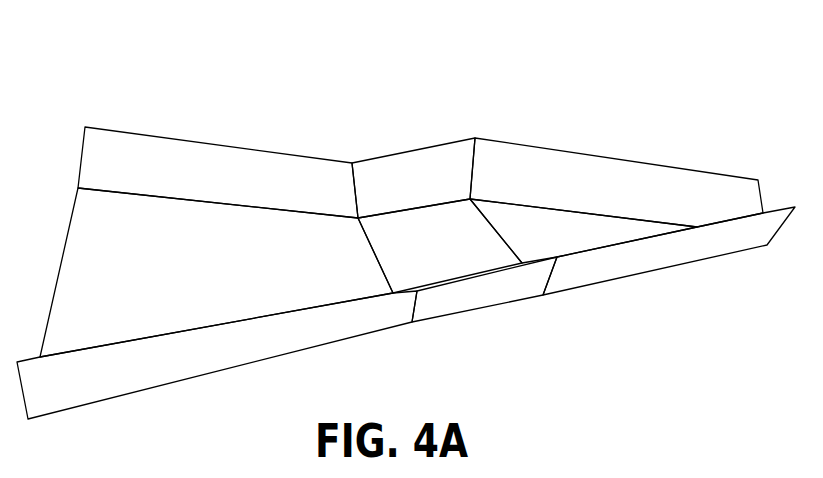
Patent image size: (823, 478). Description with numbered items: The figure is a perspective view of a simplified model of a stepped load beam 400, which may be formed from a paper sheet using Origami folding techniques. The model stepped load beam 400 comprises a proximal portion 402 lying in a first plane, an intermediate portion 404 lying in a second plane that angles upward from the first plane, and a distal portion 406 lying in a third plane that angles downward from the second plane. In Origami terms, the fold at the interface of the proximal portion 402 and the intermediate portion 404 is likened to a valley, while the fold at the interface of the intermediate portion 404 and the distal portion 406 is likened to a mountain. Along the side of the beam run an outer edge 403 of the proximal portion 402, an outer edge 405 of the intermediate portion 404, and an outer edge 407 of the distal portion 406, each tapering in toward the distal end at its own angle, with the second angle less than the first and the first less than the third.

The stepped load beam 400 is at (228, 70).
The proximal portion 402 is at (154, 256).
The outer edge of the proximal portion 403 is at (137, 170).
The intermediate portion 404 is at (443, 248).
The outer edge of the intermediate portion 405 is at (429, 188).
The distal portion 406 is at (568, 241).
The outer edge of the distal portion 407 is at (613, 191).